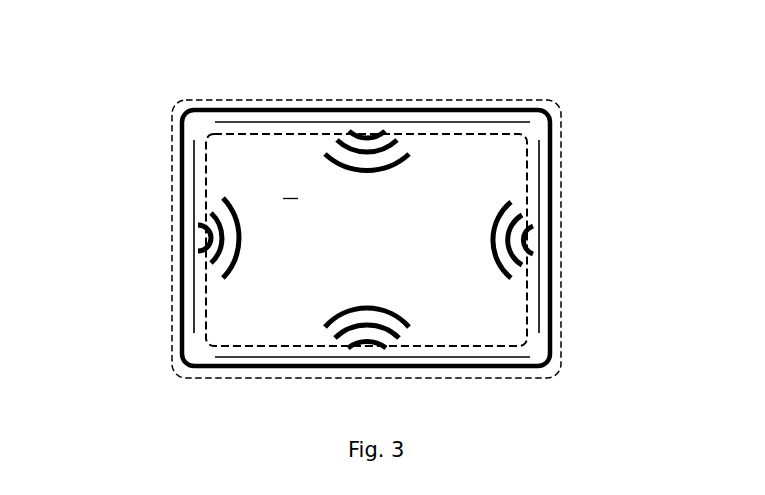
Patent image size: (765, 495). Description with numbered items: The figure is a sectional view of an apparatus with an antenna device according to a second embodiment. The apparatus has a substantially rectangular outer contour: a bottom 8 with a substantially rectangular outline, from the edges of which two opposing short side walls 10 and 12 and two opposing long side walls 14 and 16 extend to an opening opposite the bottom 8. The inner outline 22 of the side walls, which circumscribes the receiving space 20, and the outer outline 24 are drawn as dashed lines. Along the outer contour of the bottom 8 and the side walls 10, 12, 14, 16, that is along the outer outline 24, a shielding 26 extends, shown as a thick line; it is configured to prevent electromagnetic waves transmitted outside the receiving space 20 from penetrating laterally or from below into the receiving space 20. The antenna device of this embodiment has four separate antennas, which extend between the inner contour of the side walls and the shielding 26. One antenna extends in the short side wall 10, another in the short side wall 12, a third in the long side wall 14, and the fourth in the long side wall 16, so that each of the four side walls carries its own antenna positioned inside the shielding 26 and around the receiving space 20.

The bottom 8 is at (290, 188).
The short side wall 10 is at (371, 234).
The short side wall 12 is at (586, 238).
The long side wall 14 is at (366, 392).
The long side wall 16 is at (353, 78).
The receiving space 20 is at (243, 160).
The inner outline 22 is at (203, 273).
The outer outline 24 is at (171, 302).
The shielding 26 is at (182, 176).